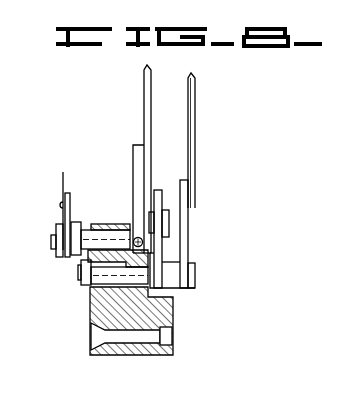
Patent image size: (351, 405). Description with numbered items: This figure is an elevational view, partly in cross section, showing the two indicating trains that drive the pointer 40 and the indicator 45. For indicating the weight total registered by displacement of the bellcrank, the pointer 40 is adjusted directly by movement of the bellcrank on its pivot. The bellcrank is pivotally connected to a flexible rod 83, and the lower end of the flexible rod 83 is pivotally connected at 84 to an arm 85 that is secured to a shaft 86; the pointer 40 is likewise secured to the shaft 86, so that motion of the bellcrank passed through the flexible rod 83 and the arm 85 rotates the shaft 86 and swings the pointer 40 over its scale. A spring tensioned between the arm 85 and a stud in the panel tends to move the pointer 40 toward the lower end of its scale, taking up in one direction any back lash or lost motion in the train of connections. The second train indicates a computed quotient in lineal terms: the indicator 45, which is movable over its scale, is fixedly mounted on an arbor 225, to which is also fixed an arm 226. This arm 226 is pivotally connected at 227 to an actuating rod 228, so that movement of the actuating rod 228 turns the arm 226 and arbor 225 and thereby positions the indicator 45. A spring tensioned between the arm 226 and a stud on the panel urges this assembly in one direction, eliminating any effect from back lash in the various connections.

The pointer 40 is at (143, 108).
The indicator 45 is at (195, 117).
The flexible rod 83 is at (63, 190).
The pivotal connection 84 is at (60, 205).
The arm 85 is at (63, 215).
The shaft 86 is at (90, 262).
The arbor 225 is at (102, 283).
The arm 226 is at (160, 253).
The pivotal connection 227 is at (147, 213).
The actuating rod 228 is at (169, 222).